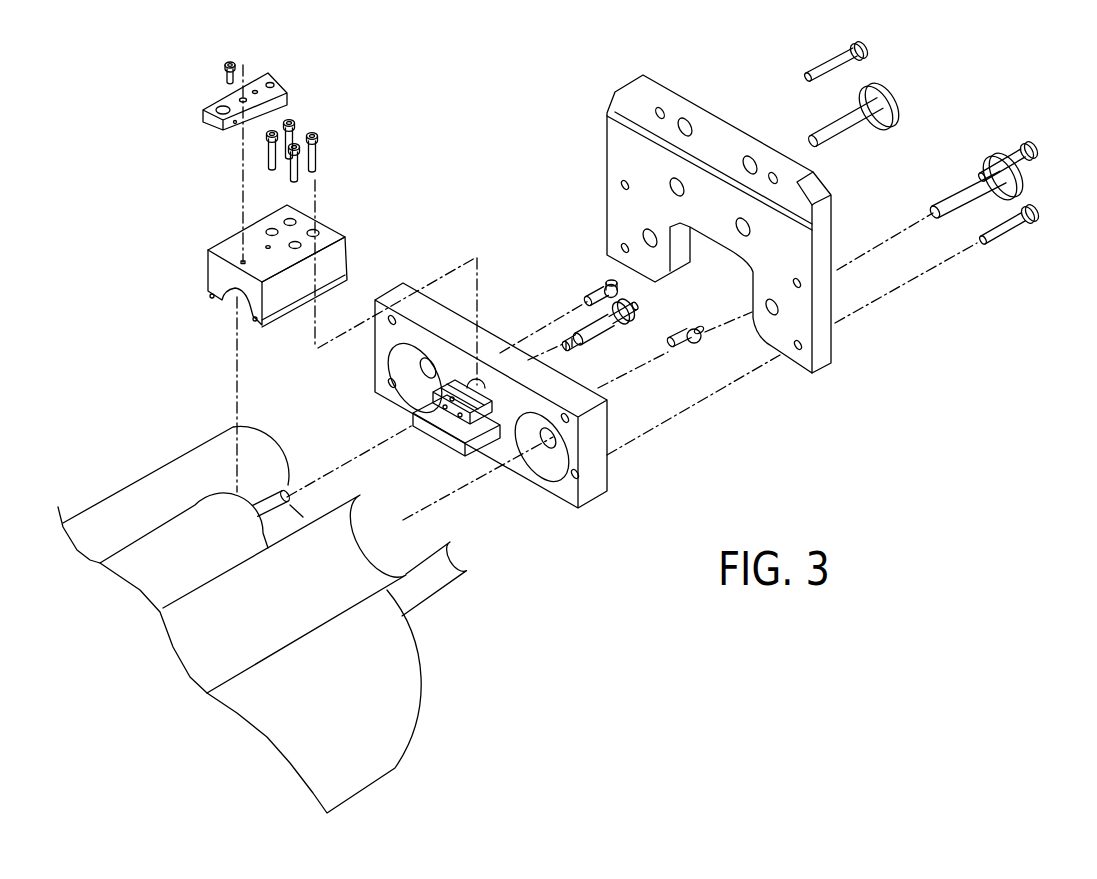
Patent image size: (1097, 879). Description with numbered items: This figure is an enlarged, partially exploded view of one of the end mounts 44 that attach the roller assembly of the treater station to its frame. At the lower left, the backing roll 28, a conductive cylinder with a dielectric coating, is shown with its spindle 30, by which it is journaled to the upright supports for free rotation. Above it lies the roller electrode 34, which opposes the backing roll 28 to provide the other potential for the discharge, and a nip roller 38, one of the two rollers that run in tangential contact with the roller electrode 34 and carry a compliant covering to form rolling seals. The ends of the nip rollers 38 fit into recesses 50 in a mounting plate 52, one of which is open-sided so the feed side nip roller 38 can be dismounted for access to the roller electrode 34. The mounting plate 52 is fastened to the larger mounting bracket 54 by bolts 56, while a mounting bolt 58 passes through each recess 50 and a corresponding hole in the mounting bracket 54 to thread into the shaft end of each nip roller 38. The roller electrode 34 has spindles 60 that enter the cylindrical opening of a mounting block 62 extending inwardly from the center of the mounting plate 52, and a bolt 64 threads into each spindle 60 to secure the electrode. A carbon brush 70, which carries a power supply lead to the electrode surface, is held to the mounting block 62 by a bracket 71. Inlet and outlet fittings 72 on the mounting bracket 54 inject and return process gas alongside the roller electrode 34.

The backing roll 28 is at (358, 788).
The spindle 30 is at (423, 597).
The roller electrode 34 is at (132, 553).
The nip rollers 38 is at (233, 577).
The end mounts 44 is at (577, 95).
The recesses 50 is at (418, 388).
The mounting plate 52 is at (497, 343).
The mounting bracket 54 is at (820, 360).
The bolts 56 is at (847, 110).
The mounting bolt 58 is at (950, 200).
The spindles 60 is at (288, 490).
The mounting block 62 is at (442, 438).
The bolt 64 is at (607, 325).
The carbon brush 70 is at (222, 63).
The bracket 71 is at (281, 82).
The inlet and outlet fittings 72 is at (687, 335).